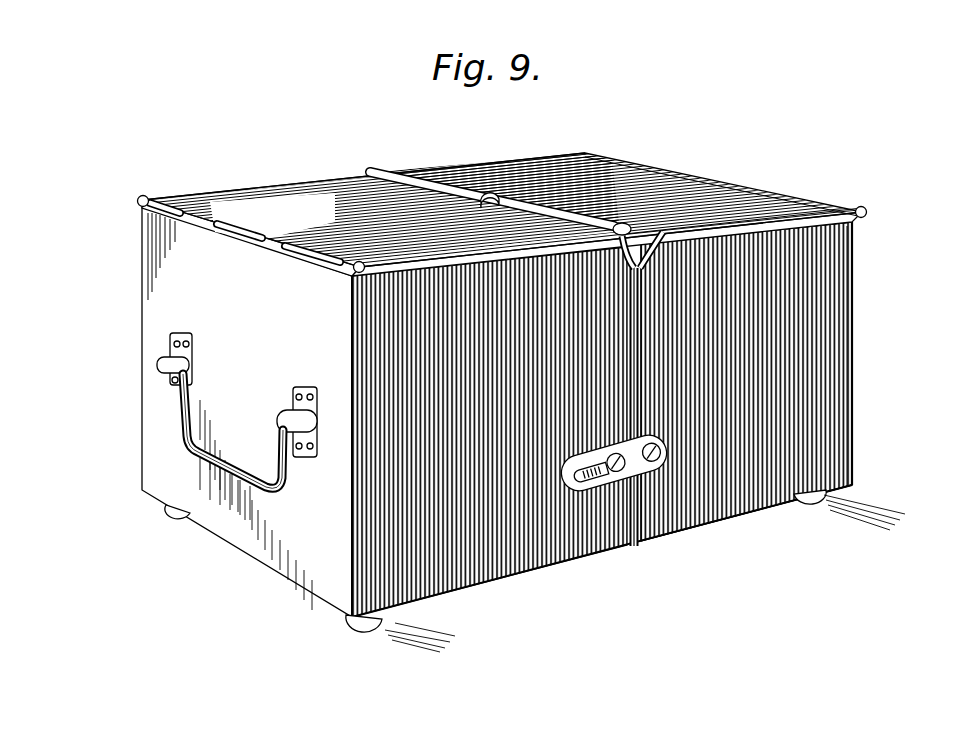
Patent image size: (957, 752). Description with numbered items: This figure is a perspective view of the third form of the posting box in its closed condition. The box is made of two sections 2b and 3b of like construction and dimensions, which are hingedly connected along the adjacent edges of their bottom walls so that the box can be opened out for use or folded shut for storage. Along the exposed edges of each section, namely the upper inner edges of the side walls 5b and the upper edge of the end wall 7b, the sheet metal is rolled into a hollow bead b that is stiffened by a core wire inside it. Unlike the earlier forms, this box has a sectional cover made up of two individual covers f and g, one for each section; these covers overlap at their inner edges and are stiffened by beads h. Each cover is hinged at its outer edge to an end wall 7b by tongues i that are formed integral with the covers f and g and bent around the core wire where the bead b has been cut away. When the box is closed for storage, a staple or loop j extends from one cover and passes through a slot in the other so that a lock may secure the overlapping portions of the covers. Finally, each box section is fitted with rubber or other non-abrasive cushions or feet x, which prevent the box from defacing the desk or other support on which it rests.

The cover g is at (306, 196).
The staple or loop j is at (491, 190).
The cover f is at (690, 183).
The tongue i is at (785, 198).
The bead h is at (655, 232).
The end wall 7b is at (175, 303).
The side wall 5b is at (822, 326).
The section 2b is at (758, 513).
The section 3b is at (546, 572).
The hollow bead b is at (630, 538).
The cushions or feet x is at (180, 519).